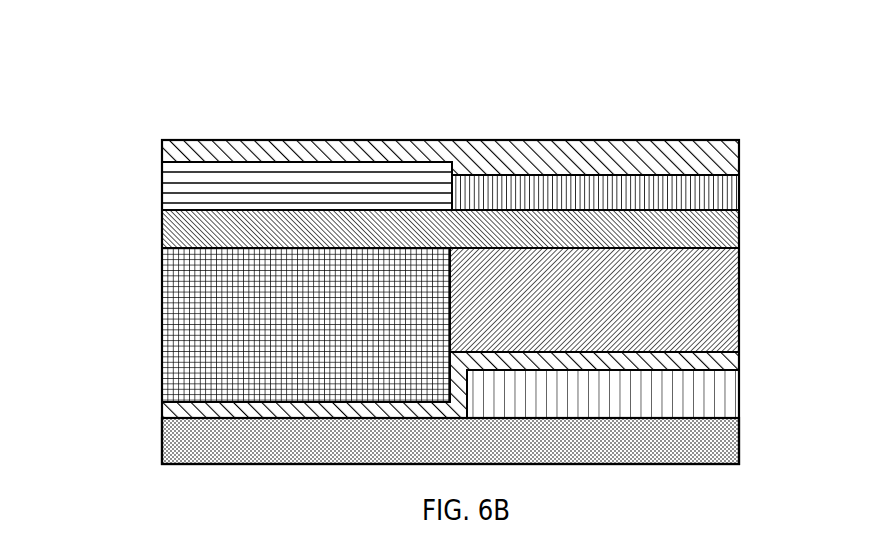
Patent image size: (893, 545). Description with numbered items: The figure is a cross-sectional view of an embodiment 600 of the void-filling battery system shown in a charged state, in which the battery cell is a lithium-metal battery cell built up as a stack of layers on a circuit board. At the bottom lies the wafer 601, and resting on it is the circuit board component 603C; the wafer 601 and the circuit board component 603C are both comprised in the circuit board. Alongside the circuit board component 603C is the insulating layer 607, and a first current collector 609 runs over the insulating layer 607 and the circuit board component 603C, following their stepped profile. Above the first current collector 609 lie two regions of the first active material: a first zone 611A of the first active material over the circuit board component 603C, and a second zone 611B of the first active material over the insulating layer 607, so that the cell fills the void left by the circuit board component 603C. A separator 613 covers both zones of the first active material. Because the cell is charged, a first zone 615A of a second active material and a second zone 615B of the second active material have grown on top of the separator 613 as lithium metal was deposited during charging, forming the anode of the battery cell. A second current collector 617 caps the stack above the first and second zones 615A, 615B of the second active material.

The embodiment of the void-filling battery system 600 is at (635, 73).
The second current collector 617 is at (692, 163).
The second zone of the second active material 615B is at (260, 185).
The first zone of the second active material 615A is at (692, 195).
The separator 613 is at (690, 227).
The second zone of the first active material 611B is at (260, 339).
The first zone of the first active material 611A is at (690, 302).
The first current collector 609 is at (690, 360).
The insulating layer 607 is at (690, 370).
The circuit board component 603C is at (690, 397).
The wafer 601 is at (690, 442).